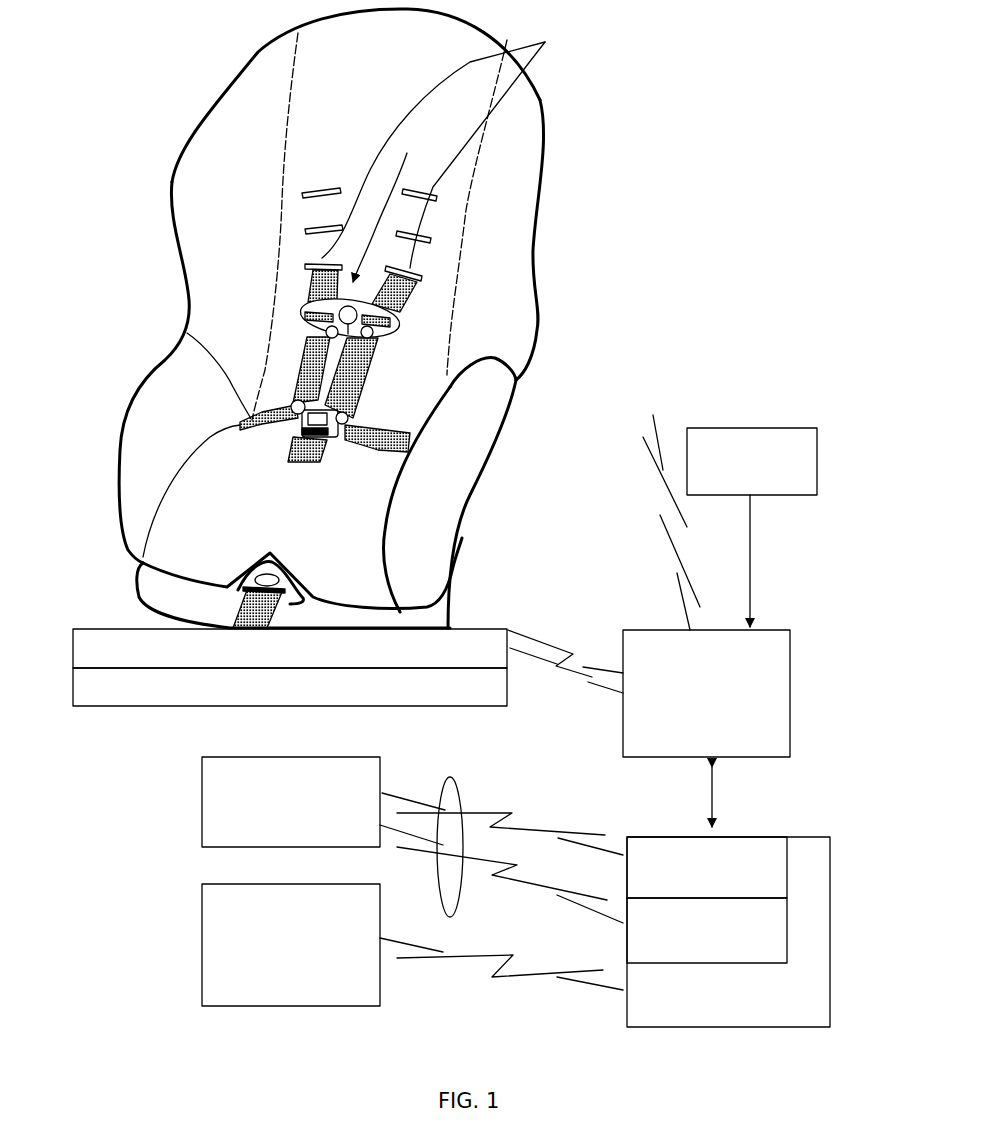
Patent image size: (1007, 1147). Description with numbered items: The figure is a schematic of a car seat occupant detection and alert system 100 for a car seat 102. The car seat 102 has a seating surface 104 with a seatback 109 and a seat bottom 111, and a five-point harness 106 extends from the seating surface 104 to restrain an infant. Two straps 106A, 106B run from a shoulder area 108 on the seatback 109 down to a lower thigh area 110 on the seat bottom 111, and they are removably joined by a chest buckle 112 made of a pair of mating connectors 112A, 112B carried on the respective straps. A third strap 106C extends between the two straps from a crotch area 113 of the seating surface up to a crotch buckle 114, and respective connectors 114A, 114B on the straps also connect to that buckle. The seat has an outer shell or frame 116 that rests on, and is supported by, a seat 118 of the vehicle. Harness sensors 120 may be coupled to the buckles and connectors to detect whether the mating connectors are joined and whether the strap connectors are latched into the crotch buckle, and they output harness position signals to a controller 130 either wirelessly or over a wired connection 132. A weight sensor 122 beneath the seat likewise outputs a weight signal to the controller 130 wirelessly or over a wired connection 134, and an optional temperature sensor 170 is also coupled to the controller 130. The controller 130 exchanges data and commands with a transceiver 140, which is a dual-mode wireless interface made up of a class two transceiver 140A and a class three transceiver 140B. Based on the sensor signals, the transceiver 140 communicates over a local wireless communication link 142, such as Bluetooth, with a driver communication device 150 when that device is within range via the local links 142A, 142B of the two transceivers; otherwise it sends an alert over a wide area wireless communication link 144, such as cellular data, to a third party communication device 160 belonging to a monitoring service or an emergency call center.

The car seat occupant detection and alert system 100 is at (566, 98).
The car seat 102 is at (547, 162).
The seating surface 104 is at (442, 223).
The harness 106 is at (413, 293).
The strap 106A is at (297, 357).
The strap 106B is at (357, 413).
The third strap 106C is at (322, 462).
The shoulder area 108 is at (458, 144).
The seatback 109 is at (302, 127).
The lower thigh area 110 is at (243, 427).
The seat bottom 111 is at (372, 472).
The chest buckle 112 is at (393, 209).
The mating connector 112A is at (313, 310).
The mating connector 112B is at (403, 321).
The crotch area 113 is at (292, 460).
The buckle 114 is at (340, 463).
The connector 114A is at (297, 433).
The connector 114B is at (350, 428).
The outer shell or frame 116 is at (233, 73).
The seat of the vehicle 118 is at (290, 687).
The harness sensors 120 is at (330, 328).
The weight sensor 122 is at (290, 649).
The controller 130 is at (706, 693).
The wired connection 132 is at (660, 522).
The wired connection 134 is at (565, 669).
The transceiver 140 is at (800, 836).
The class 2 transceiver 140A is at (707, 867).
The class 3 transceiver 140B is at (707, 930).
The local wireless communication link 142 is at (453, 776).
The local communication link 142A is at (502, 807).
The local communication link 142B is at (501, 875).
The wide area wireless communication link 144 is at (501, 988).
The driver communication device 150 is at (291, 802).
The third party communication device 160 is at (291, 945).
The temperature sensor 170 is at (752, 527).